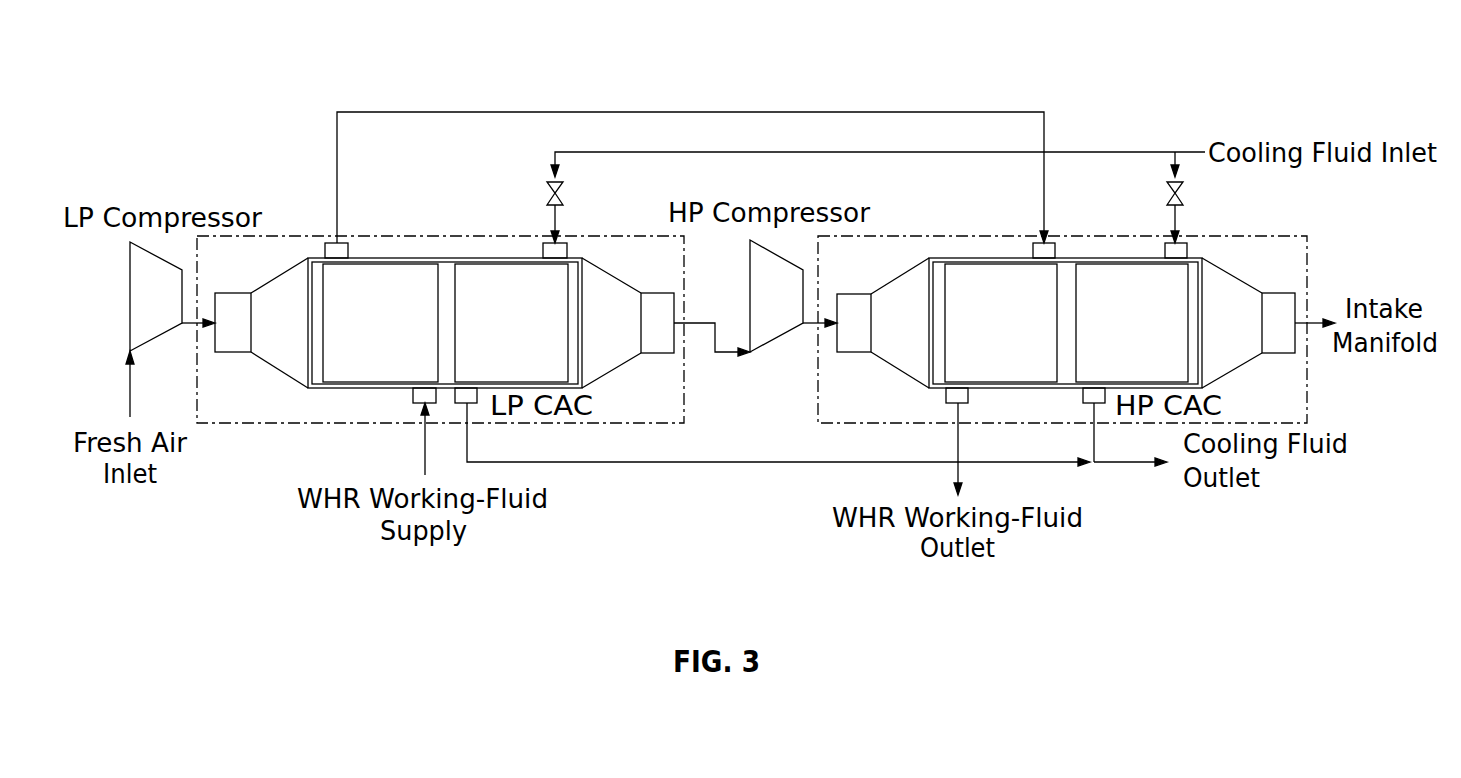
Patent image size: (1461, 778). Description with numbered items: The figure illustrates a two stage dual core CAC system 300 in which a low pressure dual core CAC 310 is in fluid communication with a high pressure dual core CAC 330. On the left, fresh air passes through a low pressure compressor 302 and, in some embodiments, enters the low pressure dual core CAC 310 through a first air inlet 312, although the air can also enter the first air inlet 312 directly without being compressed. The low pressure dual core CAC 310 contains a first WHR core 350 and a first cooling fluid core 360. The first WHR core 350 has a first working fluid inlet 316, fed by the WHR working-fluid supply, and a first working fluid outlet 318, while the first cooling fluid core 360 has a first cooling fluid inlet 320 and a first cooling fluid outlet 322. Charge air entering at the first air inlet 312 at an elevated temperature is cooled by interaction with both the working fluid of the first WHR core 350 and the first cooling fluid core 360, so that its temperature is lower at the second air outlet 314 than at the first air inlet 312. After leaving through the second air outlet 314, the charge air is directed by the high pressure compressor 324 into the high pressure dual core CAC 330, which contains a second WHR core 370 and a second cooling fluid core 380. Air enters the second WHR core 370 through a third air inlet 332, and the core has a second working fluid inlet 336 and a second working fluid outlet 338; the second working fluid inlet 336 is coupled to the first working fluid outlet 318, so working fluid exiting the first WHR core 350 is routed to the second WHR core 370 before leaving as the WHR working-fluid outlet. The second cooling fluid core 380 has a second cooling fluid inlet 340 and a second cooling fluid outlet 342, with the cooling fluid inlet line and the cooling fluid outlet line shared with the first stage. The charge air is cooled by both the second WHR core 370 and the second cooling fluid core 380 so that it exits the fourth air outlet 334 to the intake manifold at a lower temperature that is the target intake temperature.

The two stage dual core CAC system 300 is at (343, 62).
The low pressure compressor 302 is at (150, 302).
The low pressure dual core CAC 310 is at (288, 236).
The first air inlet 312 is at (227, 332).
The second air outlet 314 is at (657, 305).
The first working fluid inlet 316 is at (413, 393).
The first working fluid outlet 318 is at (342, 250).
The first cooling fluid inlet 320 is at (553, 250).
The first cooling fluid outlet 322 is at (471, 397).
The high pressure compressor 324 is at (762, 318).
The high pressure dual core CAC 330 is at (1314, 388).
The third air inlet 332 is at (848, 308).
The fourth air outlet 334 is at (1278, 308).
The second working fluid inlet 336 is at (1040, 240).
The second working fluid outlet 338 is at (960, 393).
The second cooling fluid inlet 340 is at (1172, 240).
The second cooling fluid outlet 342 is at (1097, 393).
The first WHR core 350 is at (380, 323).
The first cooling fluid core 360 is at (511, 323).
The second WHR core 370 is at (1001, 323).
The second cooling fluid core 380 is at (1132, 323).